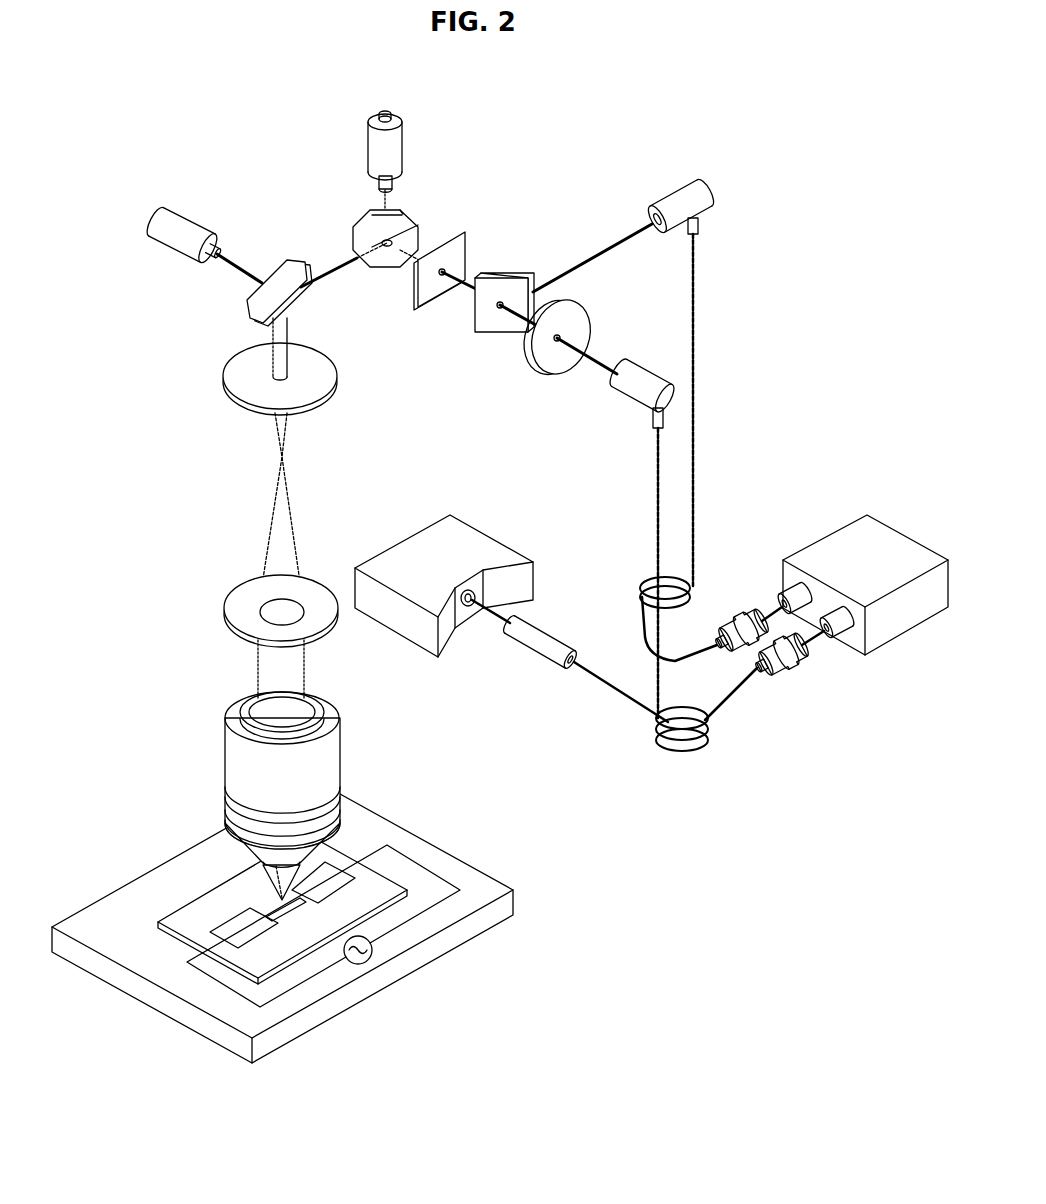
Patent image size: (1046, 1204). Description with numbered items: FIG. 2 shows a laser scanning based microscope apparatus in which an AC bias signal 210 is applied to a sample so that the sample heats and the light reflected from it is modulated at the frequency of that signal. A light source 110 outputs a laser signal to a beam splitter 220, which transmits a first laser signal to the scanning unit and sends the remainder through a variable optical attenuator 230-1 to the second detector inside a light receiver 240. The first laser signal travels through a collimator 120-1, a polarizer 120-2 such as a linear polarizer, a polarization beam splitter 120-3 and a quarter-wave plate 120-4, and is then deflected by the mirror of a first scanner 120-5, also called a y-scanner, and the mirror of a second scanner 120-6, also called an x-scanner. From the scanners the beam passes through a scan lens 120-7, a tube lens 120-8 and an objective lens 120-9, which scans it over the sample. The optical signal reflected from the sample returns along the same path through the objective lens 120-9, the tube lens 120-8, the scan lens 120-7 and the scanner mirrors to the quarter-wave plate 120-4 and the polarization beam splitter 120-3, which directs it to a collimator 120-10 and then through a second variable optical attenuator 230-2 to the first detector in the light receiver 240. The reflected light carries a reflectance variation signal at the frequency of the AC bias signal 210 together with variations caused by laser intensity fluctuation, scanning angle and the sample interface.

The light source 110 is at (403, 542).
The collimator 120-1 is at (637, 400).
The polarizer 120-2 is at (577, 308).
The polarization beam splitter 120-3 is at (512, 278).
The λ/4 wave plate 120-4 is at (467, 231).
The first scanner 120-5 is at (388, 110).
The second scanner 120-6 is at (148, 217).
The scan lens 120-7 is at (227, 368).
The tube lens 120-8 is at (227, 599).
The objective lens 120-9 is at (226, 764).
The collimator 120-10 is at (674, 186).
The AC bias signal 210 is at (362, 964).
The beam splitter 220 is at (533, 656).
The variable optical attenuator 230-1 is at (787, 678).
The variable optical attenuator 230-2 is at (733, 612).
The light receiver 240 is at (893, 541).